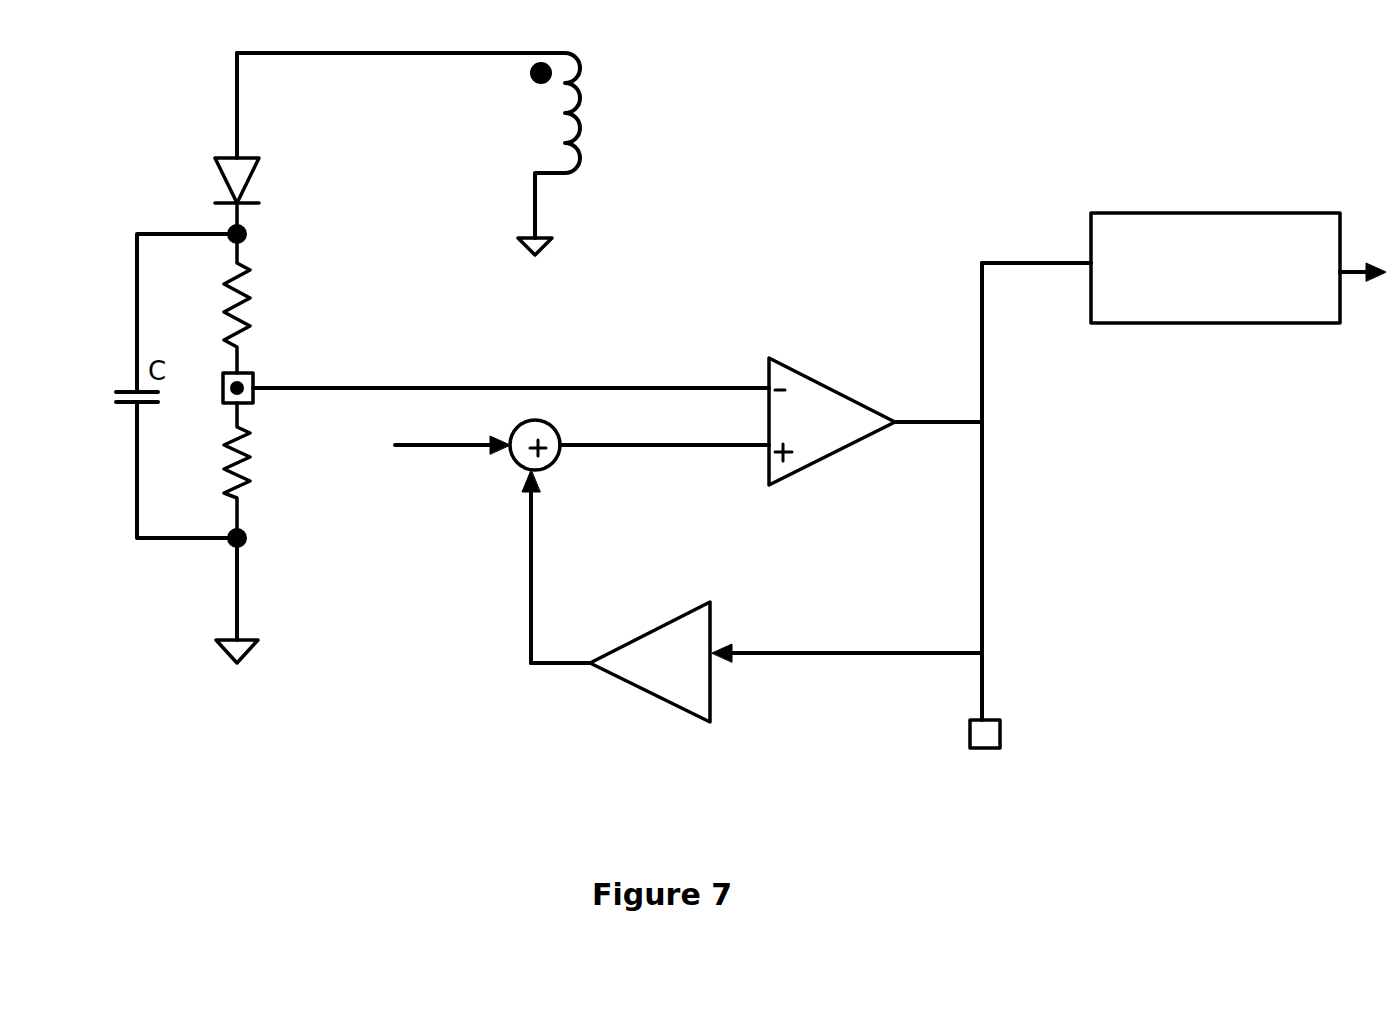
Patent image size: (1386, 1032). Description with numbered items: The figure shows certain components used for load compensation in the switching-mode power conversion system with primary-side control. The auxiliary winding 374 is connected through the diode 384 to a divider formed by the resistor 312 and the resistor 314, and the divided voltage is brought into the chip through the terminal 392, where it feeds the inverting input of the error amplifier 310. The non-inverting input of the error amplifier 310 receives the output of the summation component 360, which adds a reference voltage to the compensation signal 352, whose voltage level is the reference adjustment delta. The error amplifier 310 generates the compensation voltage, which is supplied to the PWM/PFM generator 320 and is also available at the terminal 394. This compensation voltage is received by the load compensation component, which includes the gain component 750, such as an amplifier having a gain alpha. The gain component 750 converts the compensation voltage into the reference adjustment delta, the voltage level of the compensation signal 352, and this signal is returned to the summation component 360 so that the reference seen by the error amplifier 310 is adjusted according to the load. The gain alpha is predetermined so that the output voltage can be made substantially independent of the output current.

The diode 384 is at (256, 152).
The auxiliary winding 374 is at (582, 70).
The resistor 312 is at (222, 326).
The resistor 314 is at (223, 484).
The terminal 392 is at (248, 404).
The summation component 360 is at (558, 428).
The compensation signal 352 is at (527, 557).
The error amplifier 310 is at (860, 440).
The PWM/PFM generator 320 is at (1186, 212).
The gain component 750 is at (672, 703).
The terminal 394 is at (983, 750).